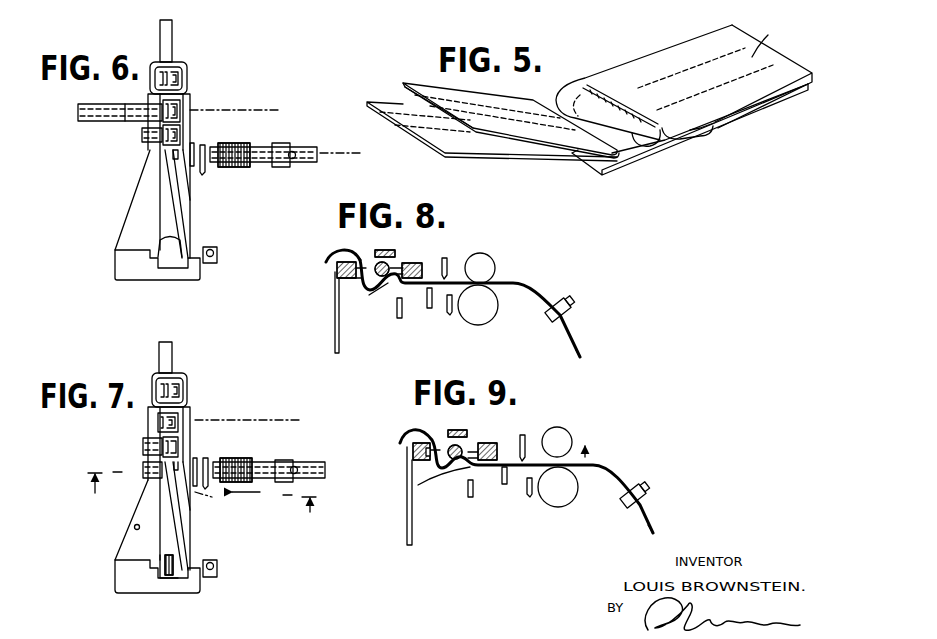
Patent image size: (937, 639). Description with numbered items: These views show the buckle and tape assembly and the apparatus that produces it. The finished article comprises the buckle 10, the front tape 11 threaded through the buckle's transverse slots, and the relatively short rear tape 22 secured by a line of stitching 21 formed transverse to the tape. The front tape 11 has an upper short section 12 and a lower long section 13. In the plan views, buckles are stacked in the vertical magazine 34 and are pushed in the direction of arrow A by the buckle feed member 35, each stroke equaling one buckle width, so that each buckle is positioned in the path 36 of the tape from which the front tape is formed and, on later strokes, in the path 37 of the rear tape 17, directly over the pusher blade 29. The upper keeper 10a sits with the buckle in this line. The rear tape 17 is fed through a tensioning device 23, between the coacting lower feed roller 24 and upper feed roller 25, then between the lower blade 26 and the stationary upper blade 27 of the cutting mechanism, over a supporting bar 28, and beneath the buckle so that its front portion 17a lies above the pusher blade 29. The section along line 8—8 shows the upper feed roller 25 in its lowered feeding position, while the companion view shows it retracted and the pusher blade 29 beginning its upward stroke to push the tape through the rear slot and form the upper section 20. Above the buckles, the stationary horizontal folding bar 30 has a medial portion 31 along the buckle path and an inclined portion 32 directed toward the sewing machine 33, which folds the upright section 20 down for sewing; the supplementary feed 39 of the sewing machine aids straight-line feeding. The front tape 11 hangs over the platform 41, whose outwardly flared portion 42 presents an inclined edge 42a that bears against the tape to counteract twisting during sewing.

In FIG. 6, the buckle 10 is at (182, 125).
In FIG. 5, the buckle 10 is at (703, 132).
In FIG. 8, the buckle 10 is at (408, 263).
In FIG. 7, the buckle 10 is at (180, 460).
In FIG. 9, the buckle 10 is at (487, 451).
In FIG. 6, the upper keeper 10a is at (182, 100).
In FIG. 6, the front tape 11 is at (75, 113).
In FIG. 5, the front tape 11 is at (402, 82).
In FIG. 8, the front tape 11 is at (332, 286).
In FIG. 9, the front tape 11 is at (404, 470).
In FIG. 6, the upper short section 12 is at (143, 135).
In FIG. 8, the upper short section 12 is at (326, 258).
In FIG. 7, the upper short section 12 is at (143, 447).
In FIG. 8, the lower long section 13 is at (335, 327).
In FIG. 6, the tape 17 is at (310, 146).
In FIG. 8, the tape 17 is at (575, 342).
In FIG. 7, the tape 17 is at (313, 462).
In FIG. 9, the tape 17 is at (655, 525).
In FIG. 8, the front portion of tape 17a is at (375, 296).
In FIG. 9, the front portion of tape 17a is at (440, 482).
In FIG. 5, the upper section of tape 20 is at (755, 92).
In FIG. 5, the line of stitching 21 is at (768, 40).
In FIG. 5, the rear tape 22 is at (662, 52).
In FIG. 6, the tensioning device 23 is at (280, 143).
In FIG. 8, the tensioning device 23 is at (566, 311).
In FIG. 7, the tensioning device 23 is at (284, 460).
In FIG. 9, the tensioning device 23 is at (642, 497).
In FIG. 8, the lower feed roller 24 is at (492, 312).
In FIG. 9, the lower feed roller 24 is at (575, 492).
In FIG. 6, the upper feed roller 25 is at (240, 146).
In FIG. 8, the upper feed roller 25 is at (492, 265).
In FIG. 7, the upper feed roller 25 is at (240, 460).
In FIG. 9, the upper feed roller 25 is at (568, 440).
In FIG. 6, the lower cutting blade 26 is at (206, 162).
In FIG. 8, the lower cutting blade 26 is at (450, 315).
In FIG. 9, the lower cutting blade 26 is at (530, 497).
In FIG. 8, the upper cutting blade 27 is at (446, 262).
In FIG. 9, the upper cutting blade 27 is at (524, 440).
In FIG. 6, the supporting bar 28 is at (192, 168).
In FIG. 8, the supporting bar 28 is at (430, 308).
In FIG. 9, the supporting bar 28 is at (505, 485).
In FIG. 6, the pusher blade 29 is at (173, 153).
In FIG. 8, the pusher blade 29 is at (400, 318).
In FIG. 9, the pusher blade 29 is at (470, 498).
In FIG. 6, the stationary horizontal folding bar 30 is at (177, 200).
In FIG. 8, the stationary horizontal folding bar 30 is at (385, 250).
In FIG. 7, the stationary horizontal folding bar 30 is at (165, 497).
In FIG. 9, the stationary horizontal folding bar 30 is at (462, 430).
In FIG. 6, the medial portion of folding bar 31 is at (167, 168).
In FIG. 6, the inclined portion of folding bar 32 is at (180, 240).
In FIG. 7, the inclined portion of folding bar 32 is at (178, 528).
In FIG. 6, the sewing machine 33 is at (217, 257).
In FIG. 7, the sewing machine 33 is at (217, 564).
In FIG. 6, the vertical magazine 34 is at (187, 68).
In FIG. 7, the vertical magazine 34 is at (187, 380).
In FIG. 6, the buckle feed member 35 is at (160, 35).
In FIG. 7, the buckle feed member 35 is at (172, 345).
In FIG. 6, the path of front tape 36 is at (265, 108).
In FIG. 7, the path of front tape 36 is at (275, 418).
In FIG. 6, the path of tape 17 37 is at (345, 153).
In FIG. 7, the supplementary feed 39 is at (168, 577).
In FIG. 6, the platform 41 is at (127, 222).
In FIG. 8, the platform 41 is at (337, 270).
In FIG. 9, the platform 41 is at (413, 452).
In FIG. 7, the outwardly flared portion 42 is at (127, 540).
In FIG. 7, the inclined edge 42a is at (134, 527).
In FIG. 7, the section line 8— 8 is at (202, 494).
In FIG. 6, the arrow A is at (182, 42).